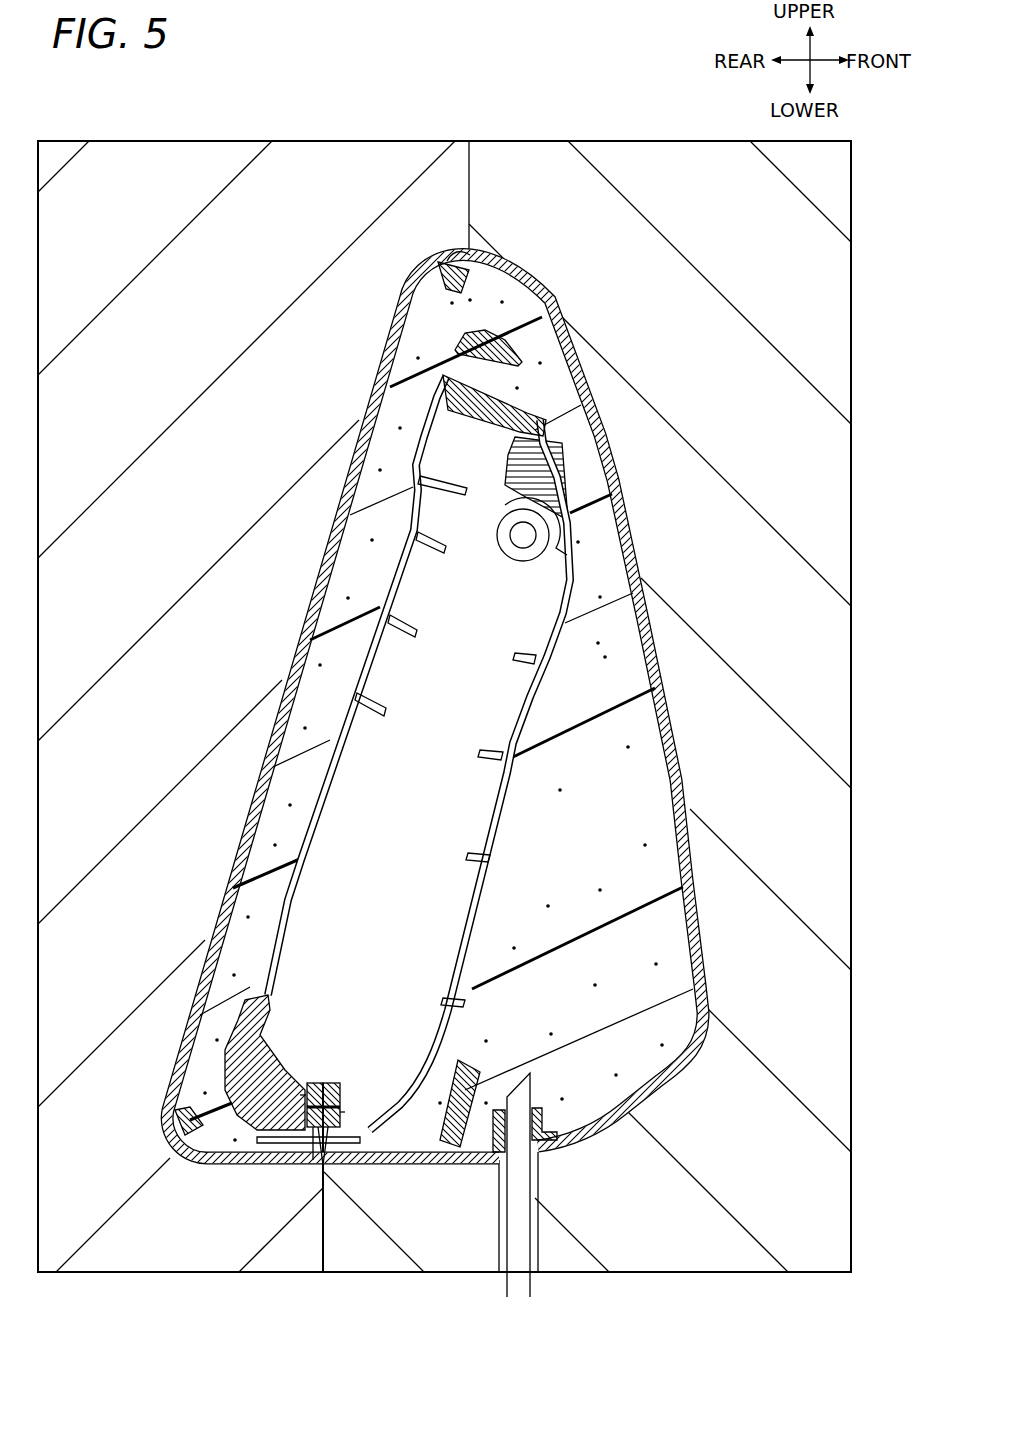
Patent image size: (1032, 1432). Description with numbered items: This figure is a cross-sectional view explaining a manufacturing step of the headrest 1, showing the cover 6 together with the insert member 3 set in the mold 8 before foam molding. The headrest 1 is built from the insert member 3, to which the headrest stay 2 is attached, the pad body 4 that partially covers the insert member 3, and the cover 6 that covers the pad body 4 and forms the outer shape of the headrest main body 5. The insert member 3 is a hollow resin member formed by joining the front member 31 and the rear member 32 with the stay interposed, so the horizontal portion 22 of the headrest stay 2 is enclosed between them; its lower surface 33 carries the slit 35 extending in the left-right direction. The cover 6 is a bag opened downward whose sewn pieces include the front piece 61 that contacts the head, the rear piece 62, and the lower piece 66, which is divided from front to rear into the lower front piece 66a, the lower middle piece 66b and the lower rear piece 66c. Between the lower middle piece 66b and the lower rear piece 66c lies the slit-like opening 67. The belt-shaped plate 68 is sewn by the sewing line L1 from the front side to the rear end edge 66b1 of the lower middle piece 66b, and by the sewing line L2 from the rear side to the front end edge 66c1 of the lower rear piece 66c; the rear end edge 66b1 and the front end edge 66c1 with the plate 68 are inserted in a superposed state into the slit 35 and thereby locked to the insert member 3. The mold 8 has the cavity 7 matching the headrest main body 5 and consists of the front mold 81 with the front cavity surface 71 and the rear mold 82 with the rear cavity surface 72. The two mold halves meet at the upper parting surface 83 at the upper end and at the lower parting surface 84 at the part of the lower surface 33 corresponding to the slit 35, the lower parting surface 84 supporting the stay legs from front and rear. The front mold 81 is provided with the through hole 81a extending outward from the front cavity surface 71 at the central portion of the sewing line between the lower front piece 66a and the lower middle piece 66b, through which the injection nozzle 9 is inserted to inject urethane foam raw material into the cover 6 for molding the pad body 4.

The headrest 1 is at (541, 247).
The headrest stay 2 is at (532, 529).
The insert member 3 is at (426, 824).
The pad body 4 is at (676, 962).
The headrest main body 5 is at (396, 310).
The cover 6 is at (677, 743).
The cavity 7 is at (640, 887).
The mold 8 is at (640, 54).
The injection nozzle 9 is at (531, 1285).
The horizontal portion 22 is at (573, 583).
The front member 31 is at (537, 697).
The rear member 32 is at (347, 690).
The lower surface 33 is at (273, 1167).
The slit 35 is at (328, 1170).
The front piece 61 is at (627, 513).
The rear piece 62 is at (340, 492).
The lower piece 66 is at (366, 1140).
The lower front piece 66a is at (468, 1162).
The lower middle piece 66b is at (392, 1167).
The lower rear piece 66c is at (227, 1167).
The rear end edge 66b1 is at (333, 1083).
The front end edge 66c1 is at (313, 1080).
The opening 67 is at (317, 1167).
The plate 68 is at (300, 1085).
The front cavity surface 71 is at (603, 466).
The rear cavity surface 72 is at (316, 572).
The front mold 81 is at (650, 165).
The through hole 81a is at (527, 1232).
The rear mold 82 is at (312, 165).
The upper parting surface 83 is at (470, 190).
The lower parting surface 84 is at (327, 1250).
The sewing line L1 is at (345, 1110).
The sewing line L2 is at (297, 1093).